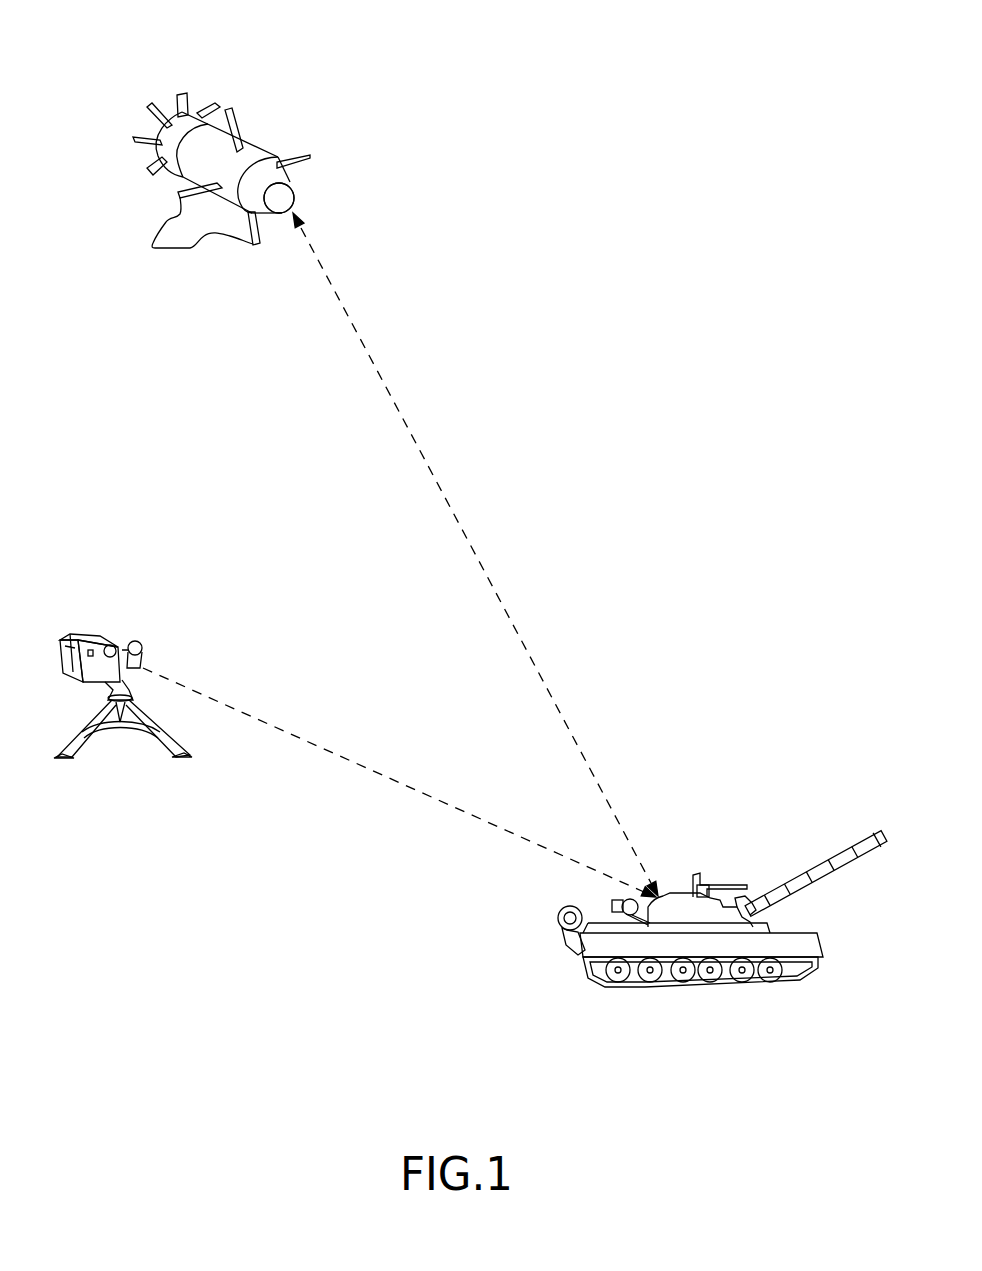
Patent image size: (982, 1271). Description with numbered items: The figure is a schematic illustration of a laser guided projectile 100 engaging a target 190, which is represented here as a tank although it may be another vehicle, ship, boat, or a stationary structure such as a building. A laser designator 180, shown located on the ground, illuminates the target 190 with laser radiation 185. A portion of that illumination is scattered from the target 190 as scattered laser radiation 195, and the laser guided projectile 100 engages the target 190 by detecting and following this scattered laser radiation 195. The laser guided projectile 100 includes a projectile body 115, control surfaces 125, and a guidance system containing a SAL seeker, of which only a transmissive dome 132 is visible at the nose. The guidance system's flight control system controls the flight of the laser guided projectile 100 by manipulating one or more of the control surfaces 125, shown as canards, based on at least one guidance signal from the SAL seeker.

The laser guided projectile 100 is at (362, 82).
The projectile body 115 is at (270, 151).
The control surfaces 125 is at (183, 231).
The transmissive dome 132 is at (296, 207).
The laser designator 180 is at (95, 636).
The laser radiation 185 is at (234, 708).
The target 190 is at (702, 882).
The scattered laser radiation 195 is at (525, 645).